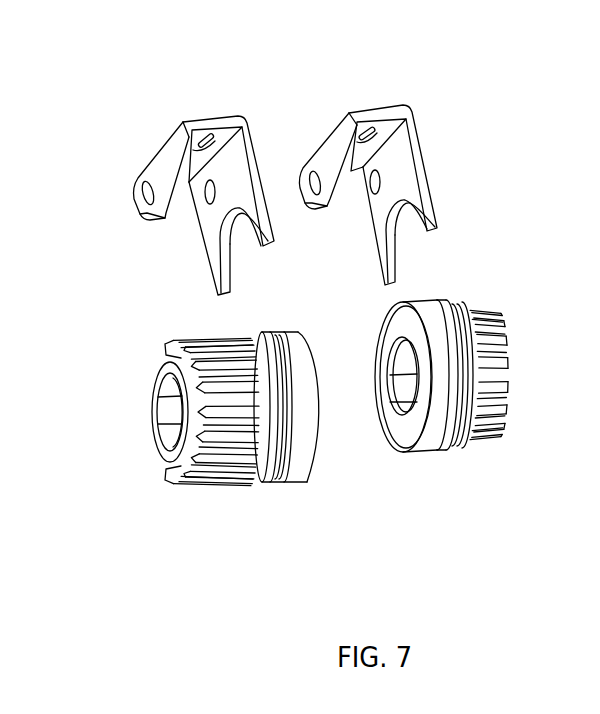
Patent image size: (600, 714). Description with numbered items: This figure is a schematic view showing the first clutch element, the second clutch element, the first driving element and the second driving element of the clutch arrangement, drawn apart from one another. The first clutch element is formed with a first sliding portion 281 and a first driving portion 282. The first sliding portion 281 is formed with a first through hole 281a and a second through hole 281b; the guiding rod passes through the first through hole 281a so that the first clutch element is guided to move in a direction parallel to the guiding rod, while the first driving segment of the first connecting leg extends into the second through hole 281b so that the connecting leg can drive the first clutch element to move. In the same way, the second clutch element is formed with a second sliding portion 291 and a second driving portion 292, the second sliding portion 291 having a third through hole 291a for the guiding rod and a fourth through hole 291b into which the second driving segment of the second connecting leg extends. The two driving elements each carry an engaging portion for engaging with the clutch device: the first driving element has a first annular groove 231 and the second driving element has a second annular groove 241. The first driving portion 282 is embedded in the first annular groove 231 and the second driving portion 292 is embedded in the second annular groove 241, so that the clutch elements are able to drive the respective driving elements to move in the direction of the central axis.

The first sliding portion 281 is at (165, 170).
The first through hole 281a is at (145, 192).
The second through hole 281b is at (212, 132).
The first driving portion 282 is at (223, 260).
The second sliding portion 291 is at (424, 151).
The third through hole 291a is at (380, 183).
The fourth through hole 291b is at (370, 125).
The second driving portion 292 is at (437, 230).
The first annular groove 231 is at (272, 477).
The second annular groove 241 is at (443, 450).